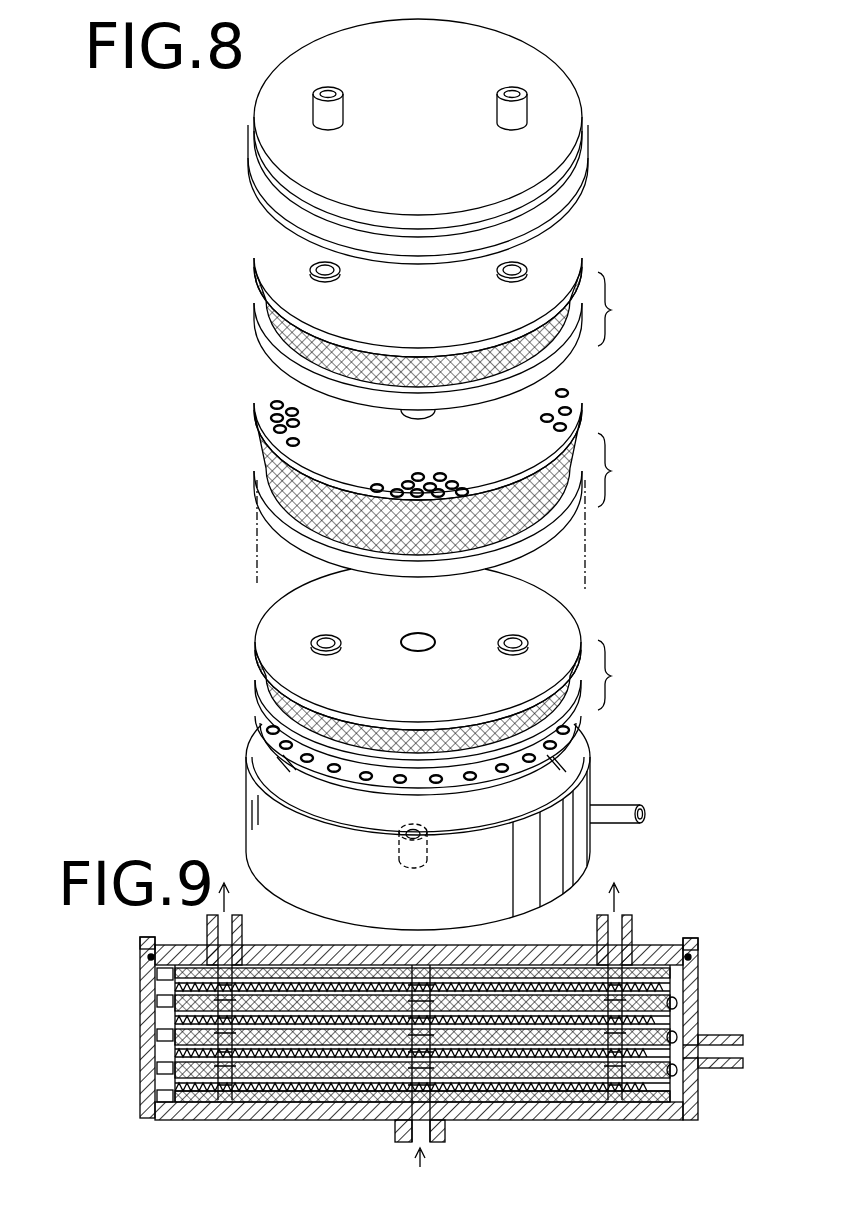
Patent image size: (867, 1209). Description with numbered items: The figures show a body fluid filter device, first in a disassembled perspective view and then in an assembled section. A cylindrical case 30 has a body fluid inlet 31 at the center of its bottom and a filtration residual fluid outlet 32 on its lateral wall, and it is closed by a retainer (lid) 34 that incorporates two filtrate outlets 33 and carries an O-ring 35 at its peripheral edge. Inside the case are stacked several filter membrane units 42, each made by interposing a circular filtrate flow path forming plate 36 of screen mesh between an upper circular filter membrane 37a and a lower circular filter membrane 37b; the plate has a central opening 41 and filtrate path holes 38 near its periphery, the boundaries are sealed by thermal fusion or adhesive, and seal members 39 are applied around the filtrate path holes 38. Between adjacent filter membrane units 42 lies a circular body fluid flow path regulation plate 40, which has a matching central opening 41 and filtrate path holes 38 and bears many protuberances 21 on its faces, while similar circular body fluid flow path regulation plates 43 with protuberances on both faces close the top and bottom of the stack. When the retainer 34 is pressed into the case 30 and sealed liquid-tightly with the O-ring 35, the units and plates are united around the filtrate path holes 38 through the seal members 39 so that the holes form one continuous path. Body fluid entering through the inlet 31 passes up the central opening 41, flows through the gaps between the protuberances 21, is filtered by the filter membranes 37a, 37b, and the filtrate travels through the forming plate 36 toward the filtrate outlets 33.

In FIG. 9, the protuberances 21 is at (322, 1103).
In FIG. 8, the cylindrical case 30 is at (251, 821).
In FIG. 9, the cylindrical case 30 is at (145, 1042).
In FIG. 8, the body fluid inlet 31 is at (416, 866).
In FIG. 9, the body fluid inlet 31 is at (445, 1130).
In FIG. 8, the filtration residual fluid outlet 32 is at (627, 822).
In FIG. 9, the filtration residual fluid outlet 32 is at (733, 1068).
In FIG. 8, the filtrate outlets 33 is at (318, 115).
In FIG. 9, the filtrate outlets 33 is at (238, 935).
In FIG. 8, the retainer (lid) 34 is at (498, 50).
In FIG. 9, the retainer (lid) 34 is at (640, 953).
In FIG. 8, the flange 35 is at (270, 178).
In FIG. 9, the flange 35 is at (140, 950).
In FIG. 8, the circular filtrate flow path forming plate 36 is at (292, 332).
In FIG. 9, the circular filtrate flow path forming plate 36 is at (560, 1102).
In FIG. 8, the upper circular filter membrane 37a is at (265, 270).
In FIG. 8, the lower circular filter membrane 37b is at (281, 347).
In FIG. 8, the filtrate path holes 38 is at (525, 268).
In FIG. 9, the filtrate path holes 38 is at (225, 1105).
In FIG. 8, the seal members 39 is at (313, 268).
In FIG. 9, the seal members 39 is at (213, 970).
In FIG. 8, the circular body fluid flow path regulation plate 40 is at (565, 402).
In FIG. 9, the circular body fluid flow path regulation plate 40 is at (150, 1072).
In FIG. 8, the central opening 41 is at (416, 278).
In FIG. 9, the central opening 41 is at (382, 1105).
In FIG. 8, the filter membrane unit 42 is at (619, 491).
In FIG. 9, the filter membrane unit 42 is at (158, 1095).
In FIG. 8, the circular body fluid flow path regulation plates 43 is at (566, 193).
In FIG. 9, the circular body fluid flow path regulation plates 43 is at (280, 968).